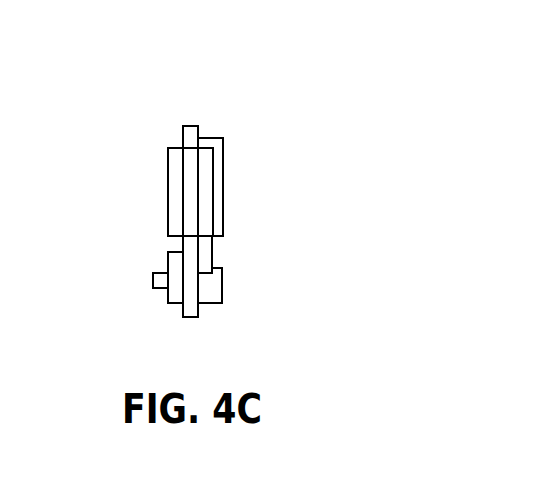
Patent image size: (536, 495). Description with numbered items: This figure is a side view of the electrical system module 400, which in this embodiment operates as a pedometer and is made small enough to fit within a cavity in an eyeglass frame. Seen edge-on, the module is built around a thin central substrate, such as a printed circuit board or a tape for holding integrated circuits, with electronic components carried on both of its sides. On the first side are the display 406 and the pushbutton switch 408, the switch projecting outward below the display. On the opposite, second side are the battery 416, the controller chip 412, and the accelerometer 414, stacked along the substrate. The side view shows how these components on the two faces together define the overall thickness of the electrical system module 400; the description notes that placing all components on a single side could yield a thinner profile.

The electrical system module 400 is at (221, 122).
The display 406 is at (168, 193).
The pushbutton switch 408 is at (170, 304).
The controller chip 412 is at (212, 249).
The accelerometer 414 is at (222, 289).
The battery 416 is at (223, 146).